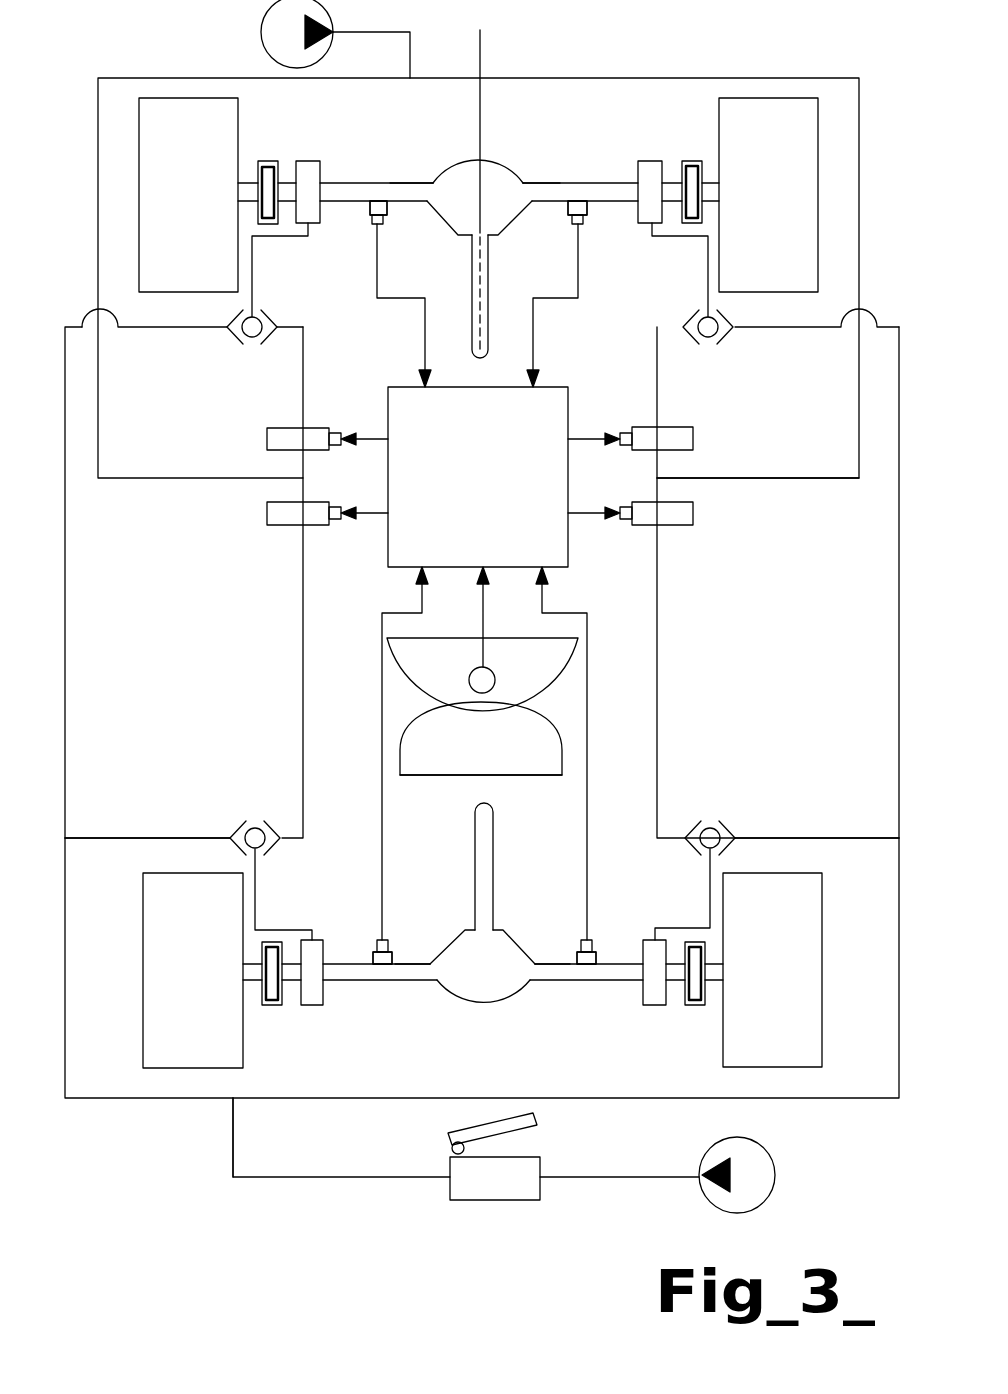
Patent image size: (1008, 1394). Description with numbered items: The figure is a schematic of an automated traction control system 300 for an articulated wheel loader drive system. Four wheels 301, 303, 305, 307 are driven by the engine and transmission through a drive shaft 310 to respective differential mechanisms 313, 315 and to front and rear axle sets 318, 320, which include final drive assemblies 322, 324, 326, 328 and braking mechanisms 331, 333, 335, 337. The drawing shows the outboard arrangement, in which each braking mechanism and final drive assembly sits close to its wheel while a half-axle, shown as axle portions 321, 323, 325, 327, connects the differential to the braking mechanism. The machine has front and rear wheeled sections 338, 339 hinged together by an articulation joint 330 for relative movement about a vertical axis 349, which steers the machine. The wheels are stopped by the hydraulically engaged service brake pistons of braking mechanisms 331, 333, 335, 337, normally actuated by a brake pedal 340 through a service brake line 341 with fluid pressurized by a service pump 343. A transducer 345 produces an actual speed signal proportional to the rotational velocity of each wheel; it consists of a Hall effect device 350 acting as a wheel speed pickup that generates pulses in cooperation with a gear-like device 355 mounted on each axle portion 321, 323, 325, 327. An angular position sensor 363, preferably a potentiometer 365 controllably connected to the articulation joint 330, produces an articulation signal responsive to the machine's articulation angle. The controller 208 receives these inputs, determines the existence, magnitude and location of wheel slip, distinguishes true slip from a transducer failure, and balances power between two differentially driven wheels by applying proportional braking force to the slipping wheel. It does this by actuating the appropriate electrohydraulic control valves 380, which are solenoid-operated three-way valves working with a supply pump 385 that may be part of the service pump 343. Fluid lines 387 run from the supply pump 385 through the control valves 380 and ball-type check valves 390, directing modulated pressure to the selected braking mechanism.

The controller 208 is at (572, 400).
The automated traction control system 300 is at (178, 1168).
The wheel 301 is at (207, 293).
The wheel 303 is at (752, 293).
The wheel 305 is at (822, 975).
The wheel 307 is at (143, 970).
The drive shaft 310 is at (488, 295).
The differential mechanism 313 is at (490, 160).
The differential mechanism 315 is at (490, 1003).
The axle set 318 is at (458, 123).
The axle set 320 is at (474, 1049).
The axle portion 321 is at (362, 183).
The final drive assembly 322 is at (265, 160).
The axle portion 323 is at (615, 183).
The final drive assembly 324 is at (695, 160).
The axle portion 325 is at (620, 985).
The final drive assembly 326 is at (698, 1005).
The axle portion 327 is at (377, 983).
The final drive assembly 328 is at (272, 1005).
The articulation joint 330 is at (432, 638).
The braking mechanism 331 is at (308, 160).
The braking mechanism 333 is at (652, 160).
The braking mechanism 335 is at (652, 1005).
The braking mechanism 337 is at (312, 1005).
The front wheeled section 338 is at (816, 503).
The rear wheeled section 339 is at (815, 807).
The brake pedal 340 is at (448, 1167).
The service brake line 341 is at (65, 662).
The service pump 343 is at (740, 1140).
The transducer 345 is at (246, 712).
The vertical axis 349 is at (483, 47).
The Hall effect device 350 is at (380, 227).
The gear-like device 355 is at (367, 215).
The angular position sensor 363 is at (442, 788).
The potentiometer 365 is at (480, 775).
The electrohydraulic control valve 380 is at (267, 440).
The supply pump 385 is at (261, 35).
The fluid line 387 is at (598, 78).
The check valve 390 is at (270, 315).